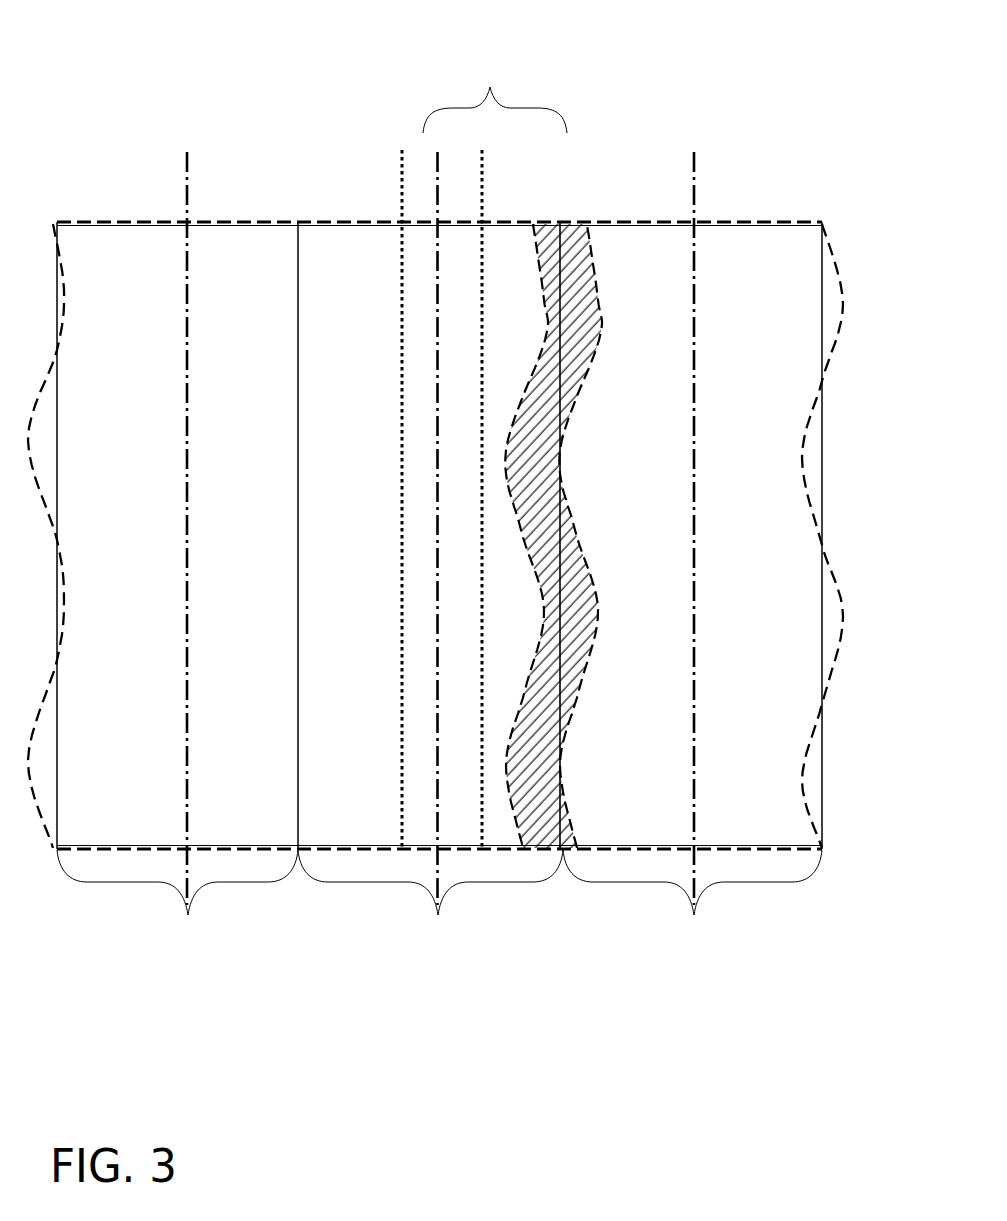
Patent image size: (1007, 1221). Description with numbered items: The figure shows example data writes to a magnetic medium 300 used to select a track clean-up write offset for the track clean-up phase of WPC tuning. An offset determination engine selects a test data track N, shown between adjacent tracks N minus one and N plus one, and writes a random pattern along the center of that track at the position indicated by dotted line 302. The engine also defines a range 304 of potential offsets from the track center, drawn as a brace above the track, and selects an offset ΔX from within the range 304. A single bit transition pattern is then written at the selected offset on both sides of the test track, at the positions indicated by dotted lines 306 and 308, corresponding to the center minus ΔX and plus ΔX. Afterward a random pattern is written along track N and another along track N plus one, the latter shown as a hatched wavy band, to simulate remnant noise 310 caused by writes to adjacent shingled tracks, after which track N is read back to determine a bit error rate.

The magnetic medium 300 is at (145, 75).
The dotted line 302 is at (437, 259).
The range 304 is at (490, 87).
The dotted line 306 is at (402, 275).
The dotted line 308 is at (483, 275).
The remnant noise 310 is at (590, 238).